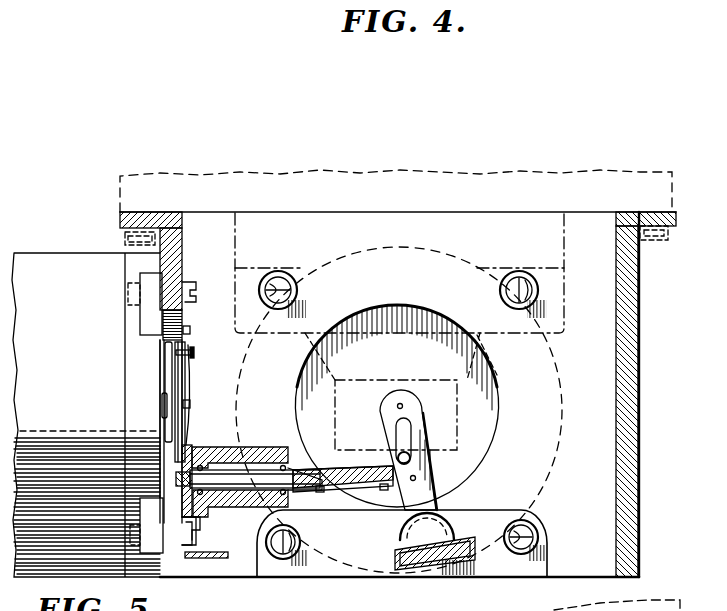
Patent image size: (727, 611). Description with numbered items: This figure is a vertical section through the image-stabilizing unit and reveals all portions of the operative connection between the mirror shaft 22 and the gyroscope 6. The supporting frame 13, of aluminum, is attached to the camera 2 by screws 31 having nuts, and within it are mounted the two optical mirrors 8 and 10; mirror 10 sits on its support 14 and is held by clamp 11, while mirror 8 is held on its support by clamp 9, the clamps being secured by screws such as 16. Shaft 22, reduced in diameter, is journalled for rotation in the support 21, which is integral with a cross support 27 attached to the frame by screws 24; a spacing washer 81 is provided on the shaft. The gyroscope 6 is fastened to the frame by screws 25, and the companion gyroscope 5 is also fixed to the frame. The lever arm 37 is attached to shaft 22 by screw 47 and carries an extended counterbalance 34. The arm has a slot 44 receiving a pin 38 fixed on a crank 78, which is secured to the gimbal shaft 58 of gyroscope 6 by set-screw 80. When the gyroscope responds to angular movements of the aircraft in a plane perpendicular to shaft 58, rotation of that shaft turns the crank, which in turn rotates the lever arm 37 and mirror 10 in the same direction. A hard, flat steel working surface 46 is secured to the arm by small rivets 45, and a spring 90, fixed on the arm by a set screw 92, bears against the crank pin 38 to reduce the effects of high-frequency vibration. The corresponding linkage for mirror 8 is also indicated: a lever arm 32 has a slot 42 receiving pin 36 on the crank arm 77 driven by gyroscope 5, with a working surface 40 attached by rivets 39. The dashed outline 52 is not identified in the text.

The camera 2 is at (409, 164).
The gyroscope 5 is at (399, 394).
The gyroscope 6 is at (42, 253).
The optical mirror 8 is at (440, 536).
The clamp 9 is at (431, 572).
The optical mirror 10 is at (357, 488).
The clamp 11 is at (320, 492).
The frame 13 is at (640, 422).
The support 14 is at (343, 482).
The screw 16 is at (440, 567).
The support 21 is at (243, 500).
The shaft 22 is at (238, 482).
The screws 24 is at (278, 276).
The screws 25 is at (195, 288).
The cross support 27 is at (503, 566).
The screws 31 is at (125, 243).
The lever arm 32 is at (394, 392).
The counterbalance 34 is at (224, 560).
The pin 36 is at (411, 460).
The lever arm 37 is at (186, 328).
The pin 38 is at (195, 353).
The rivets 39 is at (397, 407).
The working surface 40 is at (396, 433).
The slot 42 is at (412, 436).
The slot 44 is at (187, 392).
The rivets 45 is at (191, 330).
The working surface 46 is at (186, 380).
The screw 47 is at (197, 518).
The rotor outline 52 is at (462, 420).
The gimbal shaft 58 is at (164, 412).
The crank arm 77 is at (417, 449).
The crank 78 is at (165, 367).
The set-screw 80 is at (190, 447).
The spacing washer 81 is at (298, 470).
The spring 90 is at (170, 390).
The set screw 92 is at (200, 438).